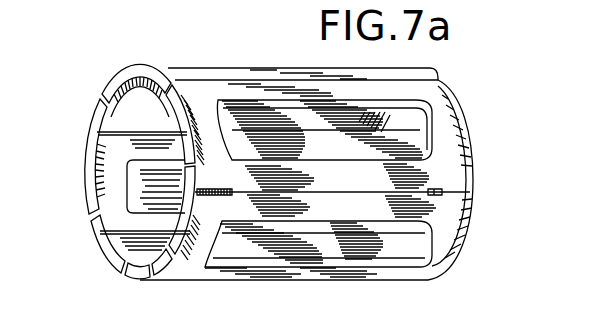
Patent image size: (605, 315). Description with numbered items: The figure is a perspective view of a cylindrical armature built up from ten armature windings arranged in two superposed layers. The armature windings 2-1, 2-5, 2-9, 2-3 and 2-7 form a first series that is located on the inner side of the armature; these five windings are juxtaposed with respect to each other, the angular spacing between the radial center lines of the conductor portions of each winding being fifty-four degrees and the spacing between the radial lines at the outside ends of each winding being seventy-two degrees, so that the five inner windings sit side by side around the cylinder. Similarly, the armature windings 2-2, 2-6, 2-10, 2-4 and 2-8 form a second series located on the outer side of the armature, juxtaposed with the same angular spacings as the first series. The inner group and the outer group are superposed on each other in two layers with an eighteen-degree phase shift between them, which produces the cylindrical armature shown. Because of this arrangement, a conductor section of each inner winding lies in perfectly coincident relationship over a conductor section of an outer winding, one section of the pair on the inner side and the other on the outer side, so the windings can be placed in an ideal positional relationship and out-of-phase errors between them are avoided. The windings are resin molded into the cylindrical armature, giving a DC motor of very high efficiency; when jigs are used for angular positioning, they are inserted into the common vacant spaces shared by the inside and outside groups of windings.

The armature winding 2-1 is at (177, 84).
The armature winding 2-2 is at (202, 100).
The armature winding 2-3 is at (105, 183).
The armature winding 2-4 is at (88, 152).
The armature winding 2-5 is at (192, 253).
The armature winding 2-6 is at (183, 264).
The armature winding 2-7 is at (125, 102).
The armature winding 2-8 is at (174, 67).
The armature winding 2-9 is at (134, 262).
The armature winding 2-10 is at (115, 257).